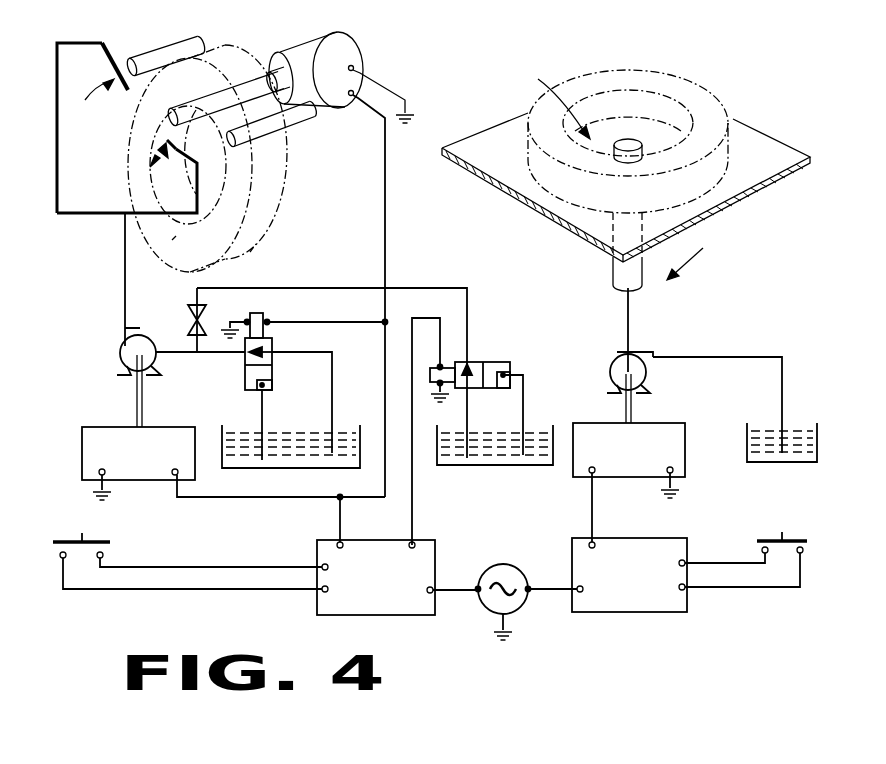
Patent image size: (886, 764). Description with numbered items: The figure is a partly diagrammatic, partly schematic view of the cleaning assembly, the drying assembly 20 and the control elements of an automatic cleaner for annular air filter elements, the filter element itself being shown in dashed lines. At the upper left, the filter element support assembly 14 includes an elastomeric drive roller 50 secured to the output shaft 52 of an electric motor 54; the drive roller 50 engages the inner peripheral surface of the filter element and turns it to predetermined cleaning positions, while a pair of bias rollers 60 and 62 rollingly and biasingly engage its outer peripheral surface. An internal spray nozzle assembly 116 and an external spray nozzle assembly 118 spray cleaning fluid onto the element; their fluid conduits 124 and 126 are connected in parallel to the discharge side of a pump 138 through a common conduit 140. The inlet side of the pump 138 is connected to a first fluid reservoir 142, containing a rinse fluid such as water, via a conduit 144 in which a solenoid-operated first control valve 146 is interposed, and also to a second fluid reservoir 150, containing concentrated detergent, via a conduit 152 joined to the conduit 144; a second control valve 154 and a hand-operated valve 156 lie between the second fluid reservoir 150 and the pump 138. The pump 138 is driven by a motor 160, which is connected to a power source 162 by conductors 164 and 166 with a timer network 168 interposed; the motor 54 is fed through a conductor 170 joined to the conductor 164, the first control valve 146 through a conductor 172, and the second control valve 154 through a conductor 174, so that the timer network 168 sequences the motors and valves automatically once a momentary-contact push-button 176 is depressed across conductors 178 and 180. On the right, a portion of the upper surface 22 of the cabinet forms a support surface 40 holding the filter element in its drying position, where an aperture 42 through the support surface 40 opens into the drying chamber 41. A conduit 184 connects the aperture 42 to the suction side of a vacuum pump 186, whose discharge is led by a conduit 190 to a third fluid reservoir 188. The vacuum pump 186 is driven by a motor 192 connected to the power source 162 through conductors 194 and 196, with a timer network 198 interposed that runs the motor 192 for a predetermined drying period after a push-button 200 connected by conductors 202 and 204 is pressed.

The filter element support assembly 14 is at (309, 134).
The drying assembly 20 is at (671, 252).
The upper surface 22 is at (473, 157).
The support surface 40 is at (776, 147).
The drying chamber 41 is at (551, 103).
The aperture 42 is at (627, 140).
The drive roller 50 is at (166, 131).
The output shaft 52 is at (283, 70).
The electric motor 54 is at (355, 50).
The bias roller 60 is at (175, 48).
The bias roller 62 is at (284, 126).
The internal spray nozzle assembly 116 is at (150, 165).
The external spray nozzle assembly 118 is at (94, 83).
The fluid conduit 124 is at (58, 137).
The fluid conduit 126 is at (128, 222).
The pump 138 is at (120, 351).
The common conduit 140 is at (124, 256).
The first fluid reservoir 142 is at (228, 466).
The conduit 144 is at (301, 351).
The first control valve 146 is at (244, 359).
The second fluid reservoir 150 is at (437, 463).
The conduit 152 is at (415, 287).
The second control valve 154 is at (476, 362).
The hand-operated valve 156 is at (190, 318).
The motor 160 is at (98, 425).
The electrical power source 162 is at (482, 609).
The conductor 164 is at (228, 497).
The conductor 166 is at (445, 583).
The timer network 168 is at (317, 606).
The conductor 170 is at (387, 218).
The conductor 172 is at (296, 320).
The conductor 174 is at (414, 524).
The push-button 176 is at (62, 540).
The conductor 178 is at (135, 567).
The conductor 180 is at (180, 588).
The conduit 184 is at (630, 313).
The vacuum pump 186 is at (615, 358).
The third fluid reservoir 188 is at (748, 463).
The conduit 190 is at (715, 357).
The motor 192 is at (612, 479).
The conductor 194 is at (594, 523).
The conductor 196 is at (540, 588).
The timer network 198 is at (604, 614).
The push-button 200 is at (772, 540).
The conductor 202 is at (705, 562).
The conductor 204 is at (718, 588).